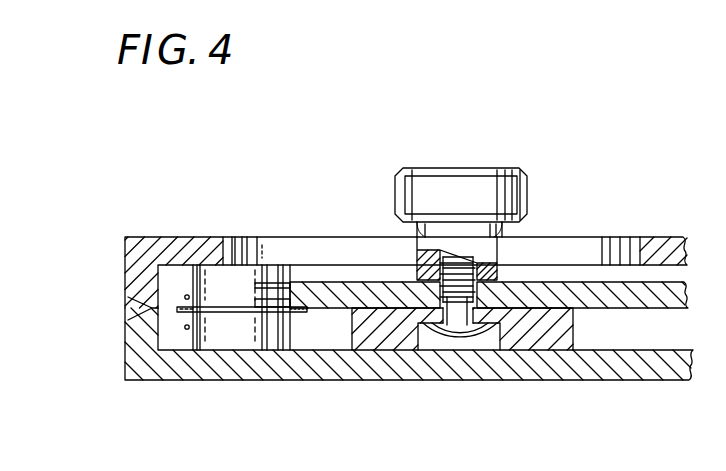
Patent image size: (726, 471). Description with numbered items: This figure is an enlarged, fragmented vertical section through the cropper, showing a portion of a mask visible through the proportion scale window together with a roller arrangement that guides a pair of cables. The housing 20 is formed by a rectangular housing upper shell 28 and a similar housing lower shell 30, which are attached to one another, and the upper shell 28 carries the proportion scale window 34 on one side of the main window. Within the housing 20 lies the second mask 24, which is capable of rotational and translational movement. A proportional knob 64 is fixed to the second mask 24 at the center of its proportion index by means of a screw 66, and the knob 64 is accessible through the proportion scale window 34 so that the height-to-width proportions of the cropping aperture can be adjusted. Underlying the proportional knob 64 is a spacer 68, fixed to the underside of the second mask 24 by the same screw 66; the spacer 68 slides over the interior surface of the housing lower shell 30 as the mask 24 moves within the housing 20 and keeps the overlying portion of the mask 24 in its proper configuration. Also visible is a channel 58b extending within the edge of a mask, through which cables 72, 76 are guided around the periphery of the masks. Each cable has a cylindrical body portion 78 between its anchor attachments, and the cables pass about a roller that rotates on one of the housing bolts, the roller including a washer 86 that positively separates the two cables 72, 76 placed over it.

The housing 20 is at (161, 237).
The second mask 24 is at (580, 288).
The housing upper shell 28 is at (125, 241).
The housing lower shell 30 is at (124, 344).
The proportion scale window 34 is at (282, 250).
The channel 58b is at (288, 281).
The proportional knob 64 is at (514, 168).
The screw 66 is at (458, 340).
The spacer 68 is at (521, 335).
The cable 72 is at (186, 295).
The cable 76 is at (187, 325).
The cylindrical body portion 78 is at (186, 327).
The washer 86 is at (254, 312).